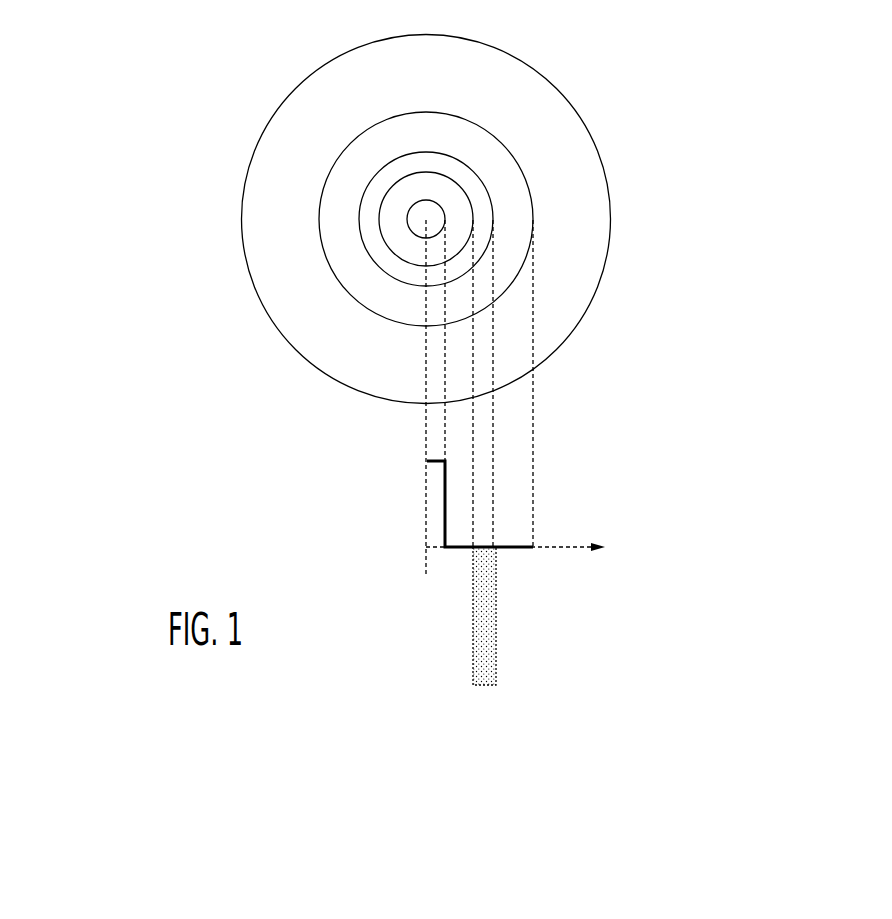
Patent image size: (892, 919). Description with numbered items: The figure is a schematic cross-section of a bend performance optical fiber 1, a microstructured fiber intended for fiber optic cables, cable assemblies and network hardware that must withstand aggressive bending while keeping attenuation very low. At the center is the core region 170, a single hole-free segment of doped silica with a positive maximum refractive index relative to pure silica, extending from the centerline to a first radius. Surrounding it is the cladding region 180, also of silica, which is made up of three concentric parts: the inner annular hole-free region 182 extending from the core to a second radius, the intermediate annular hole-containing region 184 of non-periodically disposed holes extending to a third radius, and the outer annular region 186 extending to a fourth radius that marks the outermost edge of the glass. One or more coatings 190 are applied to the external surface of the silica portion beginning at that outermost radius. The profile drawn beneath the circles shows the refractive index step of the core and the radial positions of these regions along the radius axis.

The bend performance optical fiber 1 is at (224, 44).
The core region 170 is at (418, 210).
The cladding region 180 is at (102, 174).
The inner annular hole-free region 182 is at (390, 218).
The intermediate annular hole-containing region 184 is at (372, 205).
The outer annular region 186 is at (347, 177).
The coatings 190 is at (553, 230).